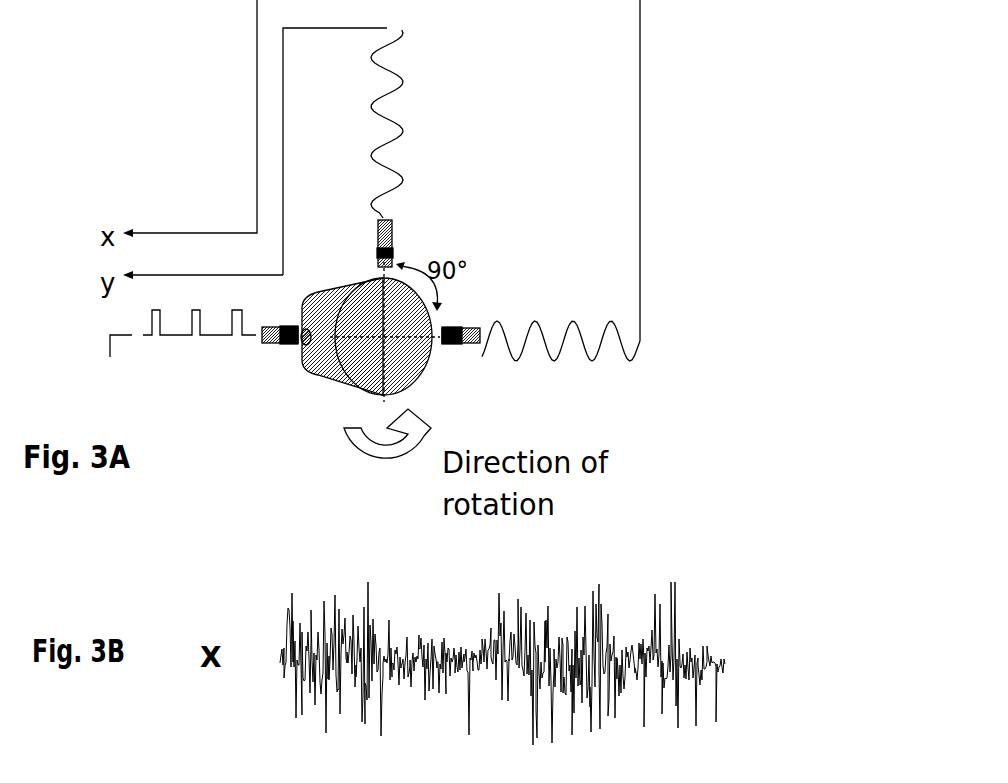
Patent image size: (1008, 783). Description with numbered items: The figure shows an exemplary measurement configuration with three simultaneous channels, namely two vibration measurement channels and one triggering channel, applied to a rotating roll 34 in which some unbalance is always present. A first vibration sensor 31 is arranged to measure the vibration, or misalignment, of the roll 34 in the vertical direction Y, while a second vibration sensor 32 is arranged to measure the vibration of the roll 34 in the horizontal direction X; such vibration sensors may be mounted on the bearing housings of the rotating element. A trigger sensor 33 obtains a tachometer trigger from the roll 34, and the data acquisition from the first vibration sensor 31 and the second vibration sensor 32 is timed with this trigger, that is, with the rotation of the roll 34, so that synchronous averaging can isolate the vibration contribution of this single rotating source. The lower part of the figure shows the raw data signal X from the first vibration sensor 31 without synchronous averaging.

The first vibration sensor 31 is at (390, 233).
The second vibration sensor 32 is at (468, 344).
The trigger sensor 33 is at (272, 342).
The roll 34 is at (348, 287).